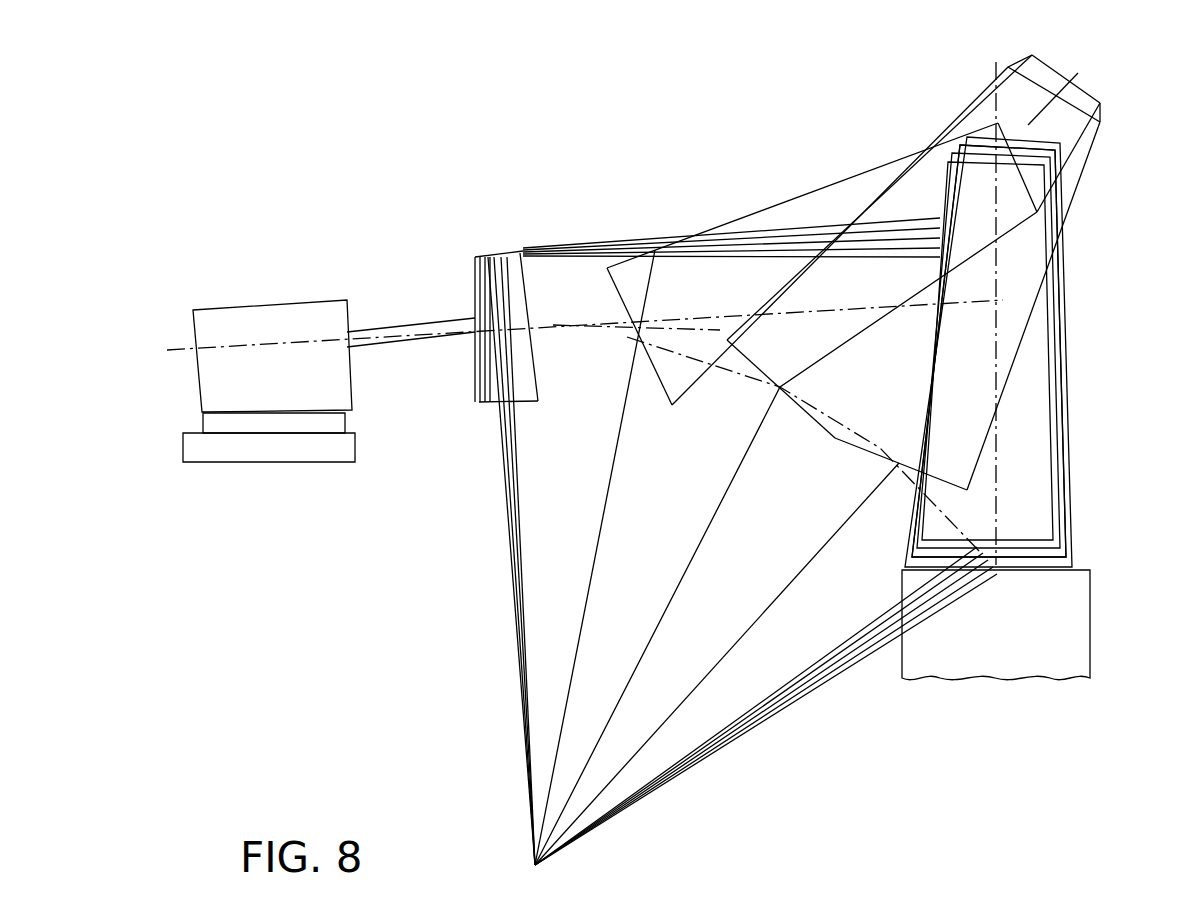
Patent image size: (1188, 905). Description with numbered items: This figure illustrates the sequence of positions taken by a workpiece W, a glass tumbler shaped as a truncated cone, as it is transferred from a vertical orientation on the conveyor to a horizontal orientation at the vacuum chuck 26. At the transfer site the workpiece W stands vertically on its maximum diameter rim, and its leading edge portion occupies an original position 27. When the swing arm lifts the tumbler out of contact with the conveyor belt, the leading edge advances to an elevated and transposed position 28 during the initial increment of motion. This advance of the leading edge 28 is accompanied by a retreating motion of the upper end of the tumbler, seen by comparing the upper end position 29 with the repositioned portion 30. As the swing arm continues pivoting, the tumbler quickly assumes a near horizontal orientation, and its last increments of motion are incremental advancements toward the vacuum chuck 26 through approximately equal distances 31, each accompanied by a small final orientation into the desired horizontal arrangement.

The vacuum chuck 26 is at (475, 270).
The original position of leading edge 27 is at (902, 570).
The elevated leading edge position 28 is at (910, 548).
The upper end position 29 is at (1057, 165).
The repositioned upper end portion 30 is at (1057, 147).
The incremental advancement distances 31 is at (493, 253).
The workpiece W is at (1053, 400).